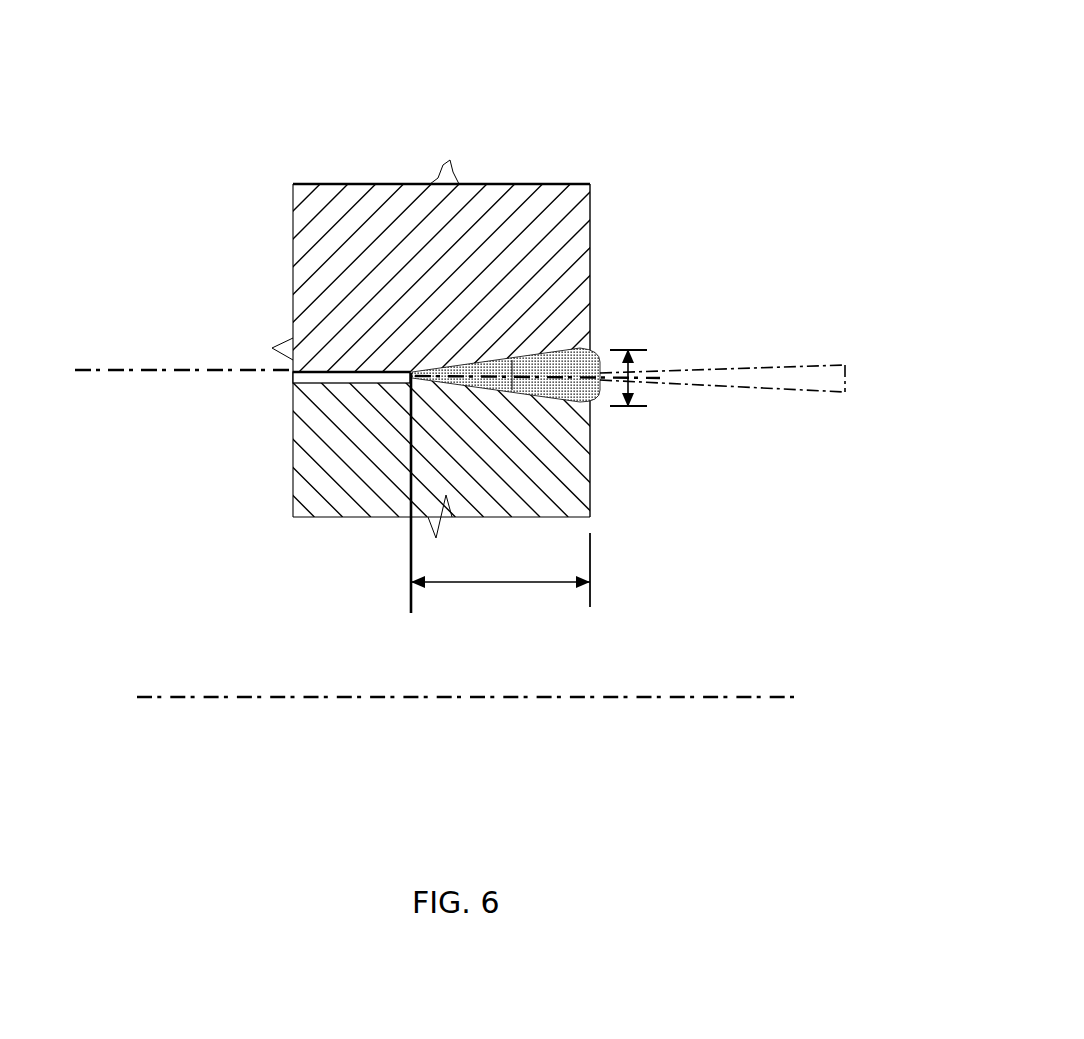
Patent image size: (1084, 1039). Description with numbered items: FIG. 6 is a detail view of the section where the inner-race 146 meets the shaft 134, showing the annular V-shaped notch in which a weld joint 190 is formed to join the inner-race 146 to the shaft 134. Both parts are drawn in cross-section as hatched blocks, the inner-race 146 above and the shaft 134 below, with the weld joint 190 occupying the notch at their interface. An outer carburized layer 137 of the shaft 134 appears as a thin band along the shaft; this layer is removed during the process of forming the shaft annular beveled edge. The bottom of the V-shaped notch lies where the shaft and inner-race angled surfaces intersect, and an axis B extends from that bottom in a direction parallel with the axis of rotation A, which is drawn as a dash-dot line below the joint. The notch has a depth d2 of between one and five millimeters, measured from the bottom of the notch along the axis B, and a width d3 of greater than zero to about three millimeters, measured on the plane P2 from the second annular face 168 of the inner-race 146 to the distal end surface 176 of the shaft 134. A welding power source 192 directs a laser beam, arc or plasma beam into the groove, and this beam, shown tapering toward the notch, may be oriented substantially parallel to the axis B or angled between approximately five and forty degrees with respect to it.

The shaft 134 is at (375, 495).
The outer carburized layer 137 is at (293, 374).
The inner-race 146 is at (378, 200).
The second annular face 168 is at (598, 250).
The distal end surface 176 is at (612, 458).
The weld joint 190 is at (540, 352).
The welding power source 192 is at (810, 377).
The axis of rotation A is at (152, 698).
The axis B is at (135, 370).
The depth d2 is at (500, 598).
The width d3 is at (637, 398).
The plane P2 is at (612, 553).